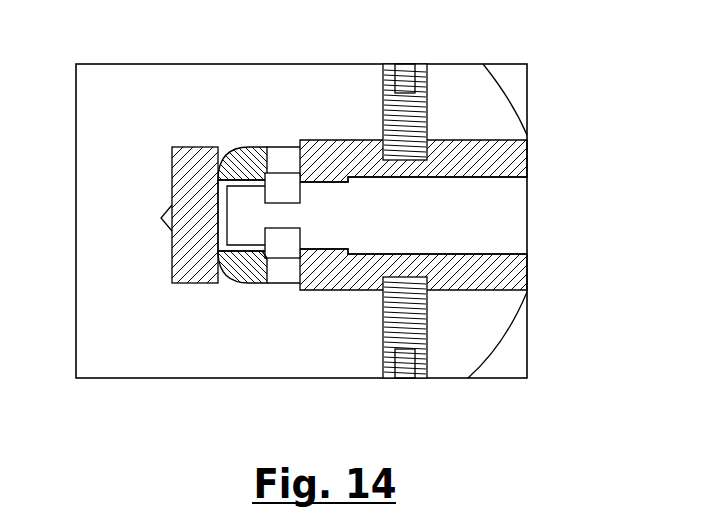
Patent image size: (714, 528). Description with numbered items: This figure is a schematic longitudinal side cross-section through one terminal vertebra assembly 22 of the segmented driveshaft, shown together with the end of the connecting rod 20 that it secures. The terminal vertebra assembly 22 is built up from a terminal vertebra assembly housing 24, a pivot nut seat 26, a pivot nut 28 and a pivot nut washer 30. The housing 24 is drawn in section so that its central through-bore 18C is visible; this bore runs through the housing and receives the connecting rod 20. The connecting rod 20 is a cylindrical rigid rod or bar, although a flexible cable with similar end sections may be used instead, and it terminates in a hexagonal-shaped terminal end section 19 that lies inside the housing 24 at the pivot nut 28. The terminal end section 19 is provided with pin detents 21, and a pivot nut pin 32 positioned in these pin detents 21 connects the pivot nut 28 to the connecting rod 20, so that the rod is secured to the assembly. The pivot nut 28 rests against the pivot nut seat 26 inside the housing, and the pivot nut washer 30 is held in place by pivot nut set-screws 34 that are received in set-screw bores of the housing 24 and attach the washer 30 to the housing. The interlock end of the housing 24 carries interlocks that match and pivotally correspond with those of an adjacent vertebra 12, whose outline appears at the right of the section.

The vertebra 12 is at (518, 97).
The central through-bore 18C is at (247, 249).
The terminal end section 19 is at (240, 228).
The connecting rod 20 is at (467, 228).
The pin detent 21 is at (268, 258).
The terminal vertebra assembly 22 is at (127, 88).
The terminal vertebra assembly housing 24 is at (145, 347).
The pivot nut seat 26 is at (192, 175).
The pivot nut 28 is at (247, 181).
The pivot nut washer 30 is at (353, 148).
The pivot nut pin 32 is at (278, 167).
The pivot nut set-screw 34 is at (402, 105).